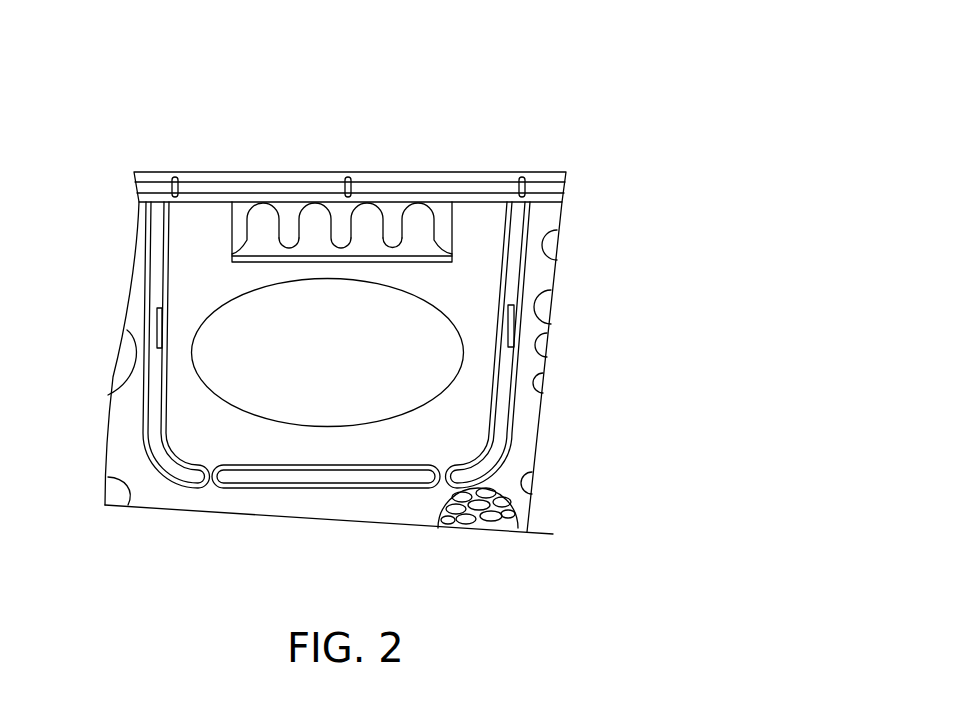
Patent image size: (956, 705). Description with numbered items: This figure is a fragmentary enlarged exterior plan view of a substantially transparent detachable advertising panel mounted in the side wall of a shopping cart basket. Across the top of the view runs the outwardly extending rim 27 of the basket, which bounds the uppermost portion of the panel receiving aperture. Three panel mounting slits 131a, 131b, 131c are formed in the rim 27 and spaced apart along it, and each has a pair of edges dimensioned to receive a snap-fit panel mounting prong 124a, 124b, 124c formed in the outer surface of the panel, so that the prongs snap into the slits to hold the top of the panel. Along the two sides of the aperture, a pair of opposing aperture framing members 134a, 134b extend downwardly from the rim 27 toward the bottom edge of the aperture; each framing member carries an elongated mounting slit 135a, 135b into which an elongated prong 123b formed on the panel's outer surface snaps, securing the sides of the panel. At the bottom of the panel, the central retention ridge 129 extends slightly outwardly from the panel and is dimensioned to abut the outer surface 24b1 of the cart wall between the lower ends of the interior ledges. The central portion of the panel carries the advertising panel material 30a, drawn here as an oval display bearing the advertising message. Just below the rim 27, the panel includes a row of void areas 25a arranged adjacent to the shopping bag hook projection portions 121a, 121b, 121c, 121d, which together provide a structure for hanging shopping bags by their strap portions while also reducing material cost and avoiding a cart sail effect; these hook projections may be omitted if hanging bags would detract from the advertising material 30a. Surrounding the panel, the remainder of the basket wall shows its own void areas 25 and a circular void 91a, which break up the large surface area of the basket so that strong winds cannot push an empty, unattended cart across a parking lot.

The void areas 25 is at (522, 525).
The void areas 25a is at (242, 213).
The outwardly extending rim 27 is at (507, 175).
The advertising panel material 30a is at (412, 340).
The void 91a is at (290, 218).
The shopping bag hook projection portion 121a is at (266, 222).
The shopping bag hook projection portion 121b is at (320, 225).
The shopping bag hook projection portion 121c is at (392, 217).
The shopping bag hook projection portion 121d is at (438, 237).
The elongated prong 123b is at (533, 315).
The snap-fit panel mounting prong 124a is at (142, 203).
The snap-fit panel mounting prong 124b is at (367, 215).
The snap-fit panel mounting prong 124c is at (528, 192).
The central retention ridge 129 is at (257, 478).
The panel mounting slit 131a is at (175, 175).
The panel mounting slit 131b is at (348, 176).
The panel mounting slit 131c is at (523, 176).
The aperture framing member 134a is at (157, 312).
The aperture framing member 134b is at (515, 405).
The elongated mounting slit 135a is at (146, 360).
The elongated mounting slit 135b is at (527, 348).
The outer surface of the cart wall 24b1 is at (405, 500).